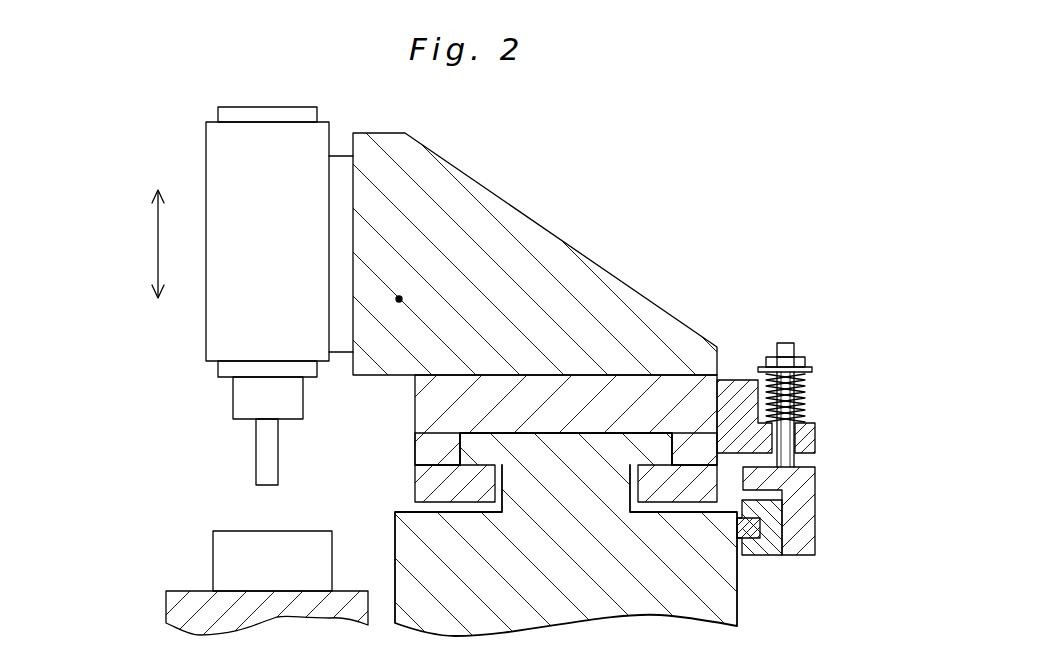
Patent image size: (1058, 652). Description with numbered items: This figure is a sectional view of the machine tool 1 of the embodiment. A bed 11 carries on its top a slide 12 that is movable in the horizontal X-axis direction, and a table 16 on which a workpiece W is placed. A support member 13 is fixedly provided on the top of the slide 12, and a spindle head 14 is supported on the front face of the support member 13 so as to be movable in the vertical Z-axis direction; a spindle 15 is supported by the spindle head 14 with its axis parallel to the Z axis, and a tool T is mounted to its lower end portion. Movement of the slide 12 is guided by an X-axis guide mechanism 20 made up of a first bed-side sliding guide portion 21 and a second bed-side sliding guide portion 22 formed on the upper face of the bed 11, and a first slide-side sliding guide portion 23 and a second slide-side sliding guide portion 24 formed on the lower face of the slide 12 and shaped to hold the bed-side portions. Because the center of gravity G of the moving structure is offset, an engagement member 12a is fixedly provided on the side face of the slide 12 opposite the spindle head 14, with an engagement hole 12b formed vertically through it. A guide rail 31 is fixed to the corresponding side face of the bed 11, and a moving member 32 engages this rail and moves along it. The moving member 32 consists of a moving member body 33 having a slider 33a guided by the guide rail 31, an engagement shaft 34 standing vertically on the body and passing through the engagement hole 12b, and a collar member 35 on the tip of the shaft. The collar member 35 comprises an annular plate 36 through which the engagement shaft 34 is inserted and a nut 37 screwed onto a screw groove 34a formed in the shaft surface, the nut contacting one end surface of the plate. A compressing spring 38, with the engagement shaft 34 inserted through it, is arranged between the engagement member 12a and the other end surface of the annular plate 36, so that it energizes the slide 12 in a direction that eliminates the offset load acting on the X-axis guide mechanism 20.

The machine tool 1 is at (669, 166).
The bed 11 is at (727, 602).
The slide 12 is at (670, 380).
The engagement member 12a is at (738, 385).
The engagement hole 12b is at (785, 438).
The support member 13 is at (518, 217).
The spindle head 14 is at (212, 165).
The spindle 15 is at (240, 397).
The table 16 is at (170, 597).
The X-axis guide mechanism 20 is at (544, 357).
The first bed-side sliding guide portion 21 is at (650, 443).
The second bed-side sliding guide portion 22 is at (472, 446).
The first slide-side sliding guide portion 23 is at (703, 450).
The second slide-side sliding guide portion 24 is at (428, 460).
The guide rail 31 is at (762, 527).
The moving member 32 is at (813, 565).
The moving member body 33 is at (810, 503).
The slider 33a is at (773, 553).
The engagement shaft 34 is at (786, 343).
The screw groove 34a is at (794, 348).
The collar member 35 is at (855, 340).
The annular plate 36 is at (812, 369).
The nut 37 is at (806, 361).
The compressing spring 38 is at (800, 378).
The center of gravity G is at (399, 299).
The tool T is at (262, 452).
The workpiece W is at (215, 565).